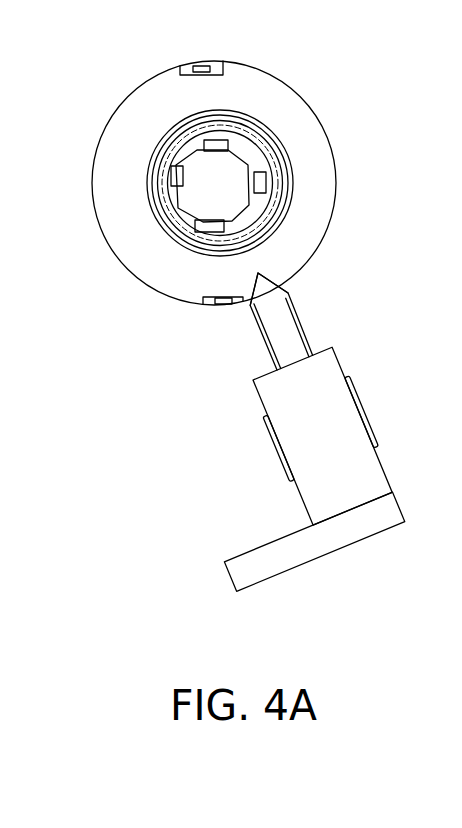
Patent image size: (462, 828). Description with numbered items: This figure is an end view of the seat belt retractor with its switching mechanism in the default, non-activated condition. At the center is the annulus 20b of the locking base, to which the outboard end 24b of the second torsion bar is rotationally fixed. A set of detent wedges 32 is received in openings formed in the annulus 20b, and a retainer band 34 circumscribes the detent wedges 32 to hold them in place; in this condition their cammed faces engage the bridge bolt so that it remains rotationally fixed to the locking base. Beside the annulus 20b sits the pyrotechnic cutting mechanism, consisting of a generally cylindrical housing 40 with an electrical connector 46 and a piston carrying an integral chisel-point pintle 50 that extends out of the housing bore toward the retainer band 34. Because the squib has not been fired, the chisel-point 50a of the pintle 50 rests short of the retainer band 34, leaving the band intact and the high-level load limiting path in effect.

The annulus 20b is at (262, 215).
The outboard end of the second torsion bar 24b is at (232, 173).
The detent wedges 32 is at (208, 143).
The retainer band 34 is at (257, 131).
The housing 40 is at (381, 467).
The electrical connector 46 is at (317, 557).
The chisel-point pintle 50 is at (300, 337).
The chisel-point 50a is at (259, 293).